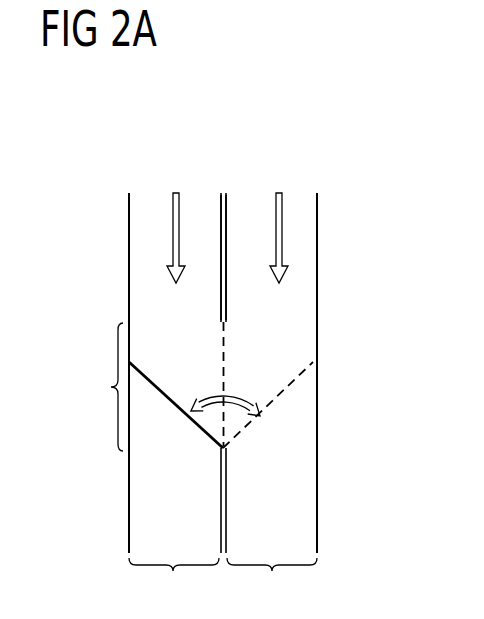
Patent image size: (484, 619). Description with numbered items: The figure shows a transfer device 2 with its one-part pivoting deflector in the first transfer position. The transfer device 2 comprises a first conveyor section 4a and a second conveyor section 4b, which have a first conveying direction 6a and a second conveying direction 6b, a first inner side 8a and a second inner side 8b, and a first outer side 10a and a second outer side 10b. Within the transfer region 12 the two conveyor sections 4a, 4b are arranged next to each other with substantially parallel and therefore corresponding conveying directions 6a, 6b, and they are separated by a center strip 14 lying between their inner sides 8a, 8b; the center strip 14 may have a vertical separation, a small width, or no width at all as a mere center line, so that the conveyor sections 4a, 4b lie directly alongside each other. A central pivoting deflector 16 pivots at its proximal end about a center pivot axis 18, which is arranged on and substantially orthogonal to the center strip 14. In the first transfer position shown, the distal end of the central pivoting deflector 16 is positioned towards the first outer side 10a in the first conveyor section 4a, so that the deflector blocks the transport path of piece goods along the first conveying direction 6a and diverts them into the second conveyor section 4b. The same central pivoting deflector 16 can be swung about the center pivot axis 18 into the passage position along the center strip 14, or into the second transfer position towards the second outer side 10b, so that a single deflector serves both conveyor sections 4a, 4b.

The transfer device 2 is at (70, 132).
The first conveyor section 4a is at (174, 583).
The second conveyor section 4b is at (272, 583).
The first conveying direction 6a is at (172, 237).
The second conveying direction 6b is at (283, 238).
The first inner side 8a is at (219, 220).
The second inner side 8b is at (228, 242).
The first outer side 10a is at (130, 194).
The second outer side 10b is at (316, 194).
The transfer region 12 is at (85, 387).
The center strip 14 is at (223, 192).
The central pivoting deflector 16 is at (178, 355).
The center pivot axis 18 is at (228, 446).